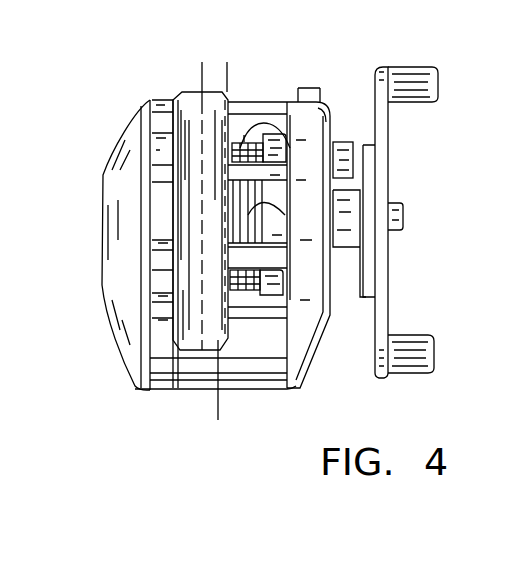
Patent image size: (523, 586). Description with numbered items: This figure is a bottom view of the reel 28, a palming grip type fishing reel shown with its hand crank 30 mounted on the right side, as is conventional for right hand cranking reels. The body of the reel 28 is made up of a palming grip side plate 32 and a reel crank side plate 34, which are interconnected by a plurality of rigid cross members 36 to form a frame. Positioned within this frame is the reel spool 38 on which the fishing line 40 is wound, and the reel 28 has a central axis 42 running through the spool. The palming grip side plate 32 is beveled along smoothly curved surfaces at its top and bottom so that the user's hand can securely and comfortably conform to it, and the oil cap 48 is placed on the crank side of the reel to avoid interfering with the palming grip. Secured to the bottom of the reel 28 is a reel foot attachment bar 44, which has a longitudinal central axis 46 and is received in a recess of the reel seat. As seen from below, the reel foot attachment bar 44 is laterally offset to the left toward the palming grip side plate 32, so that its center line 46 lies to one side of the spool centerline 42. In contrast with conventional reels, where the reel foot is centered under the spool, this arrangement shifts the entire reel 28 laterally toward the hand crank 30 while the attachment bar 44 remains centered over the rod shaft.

The reel 28 is at (128, 371).
The hand crank 30 is at (440, 80).
The palming grip side plate 32 is at (102, 234).
The reel crank side plate 34 is at (336, 300).
The rigid cross members 36 is at (260, 103).
The reel spool 38 is at (272, 151).
The fishing line 40 is at (243, 217).
The central axis 42 is at (230, 80).
The reel foot attachment bar 44 is at (176, 94).
The longitudinal central axis 46 is at (202, 78).
The oil cap 48 is at (348, 142).